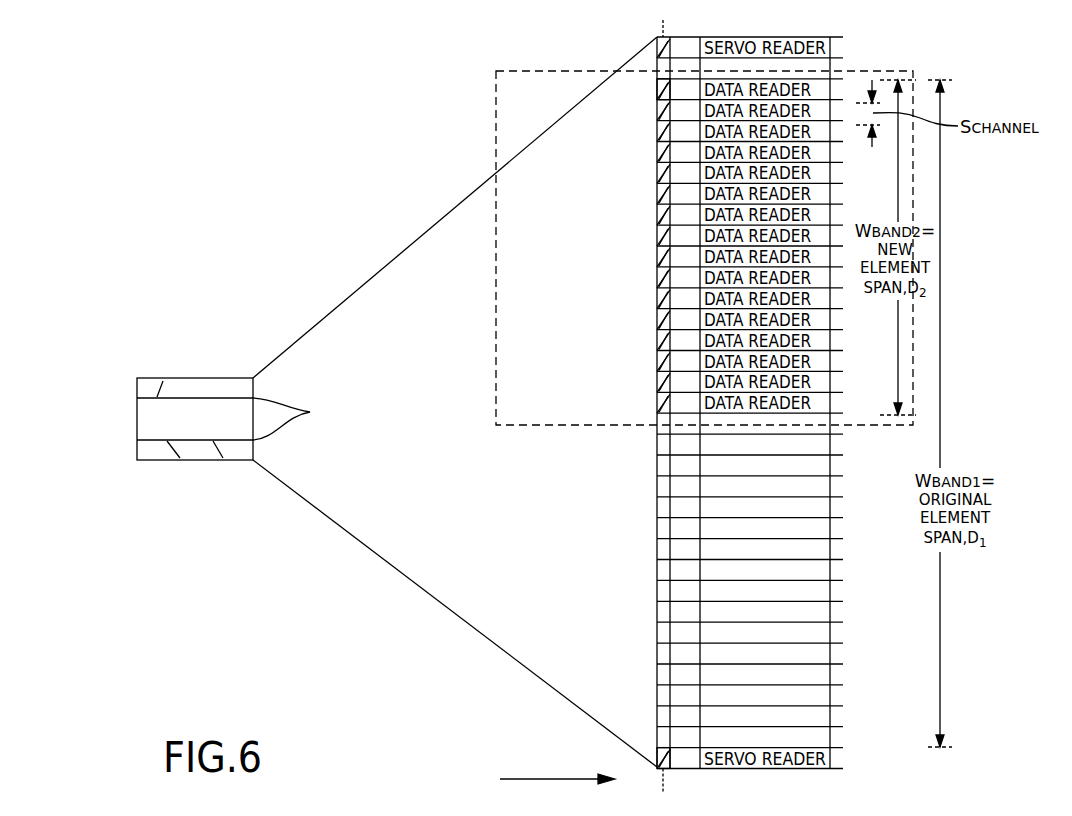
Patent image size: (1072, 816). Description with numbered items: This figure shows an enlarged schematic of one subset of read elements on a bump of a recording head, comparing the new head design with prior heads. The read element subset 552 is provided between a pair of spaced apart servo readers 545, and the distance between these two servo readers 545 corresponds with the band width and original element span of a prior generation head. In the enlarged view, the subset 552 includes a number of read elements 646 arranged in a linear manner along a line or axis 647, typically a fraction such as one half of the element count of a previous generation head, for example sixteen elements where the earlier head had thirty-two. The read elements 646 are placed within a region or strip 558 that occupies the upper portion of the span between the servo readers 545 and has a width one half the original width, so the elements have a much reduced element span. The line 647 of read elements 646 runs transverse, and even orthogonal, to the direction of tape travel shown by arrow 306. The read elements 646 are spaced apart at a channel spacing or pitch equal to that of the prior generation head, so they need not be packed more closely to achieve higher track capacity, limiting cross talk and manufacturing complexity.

The servo readers 545 is at (668, 37).
The read element subset 552 is at (116, 380).
The region or strip 558 is at (496, 157).
The read elements 646 is at (658, 95).
The line/axis 647 is at (664, 775).
The arrow 306 is at (541, 779).